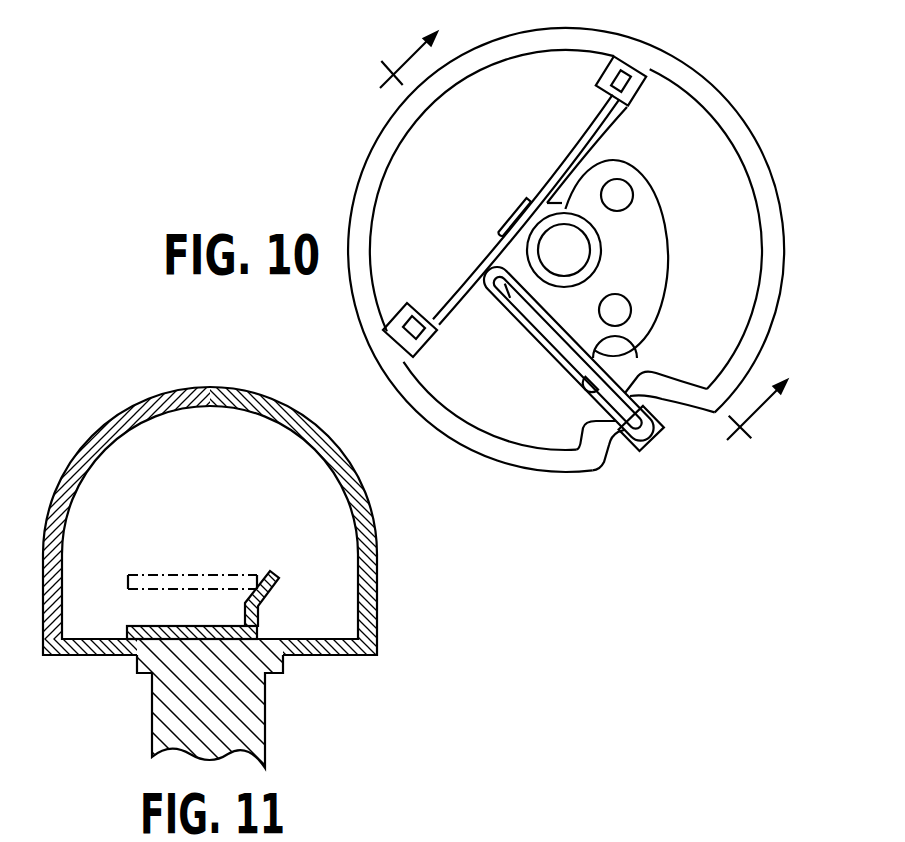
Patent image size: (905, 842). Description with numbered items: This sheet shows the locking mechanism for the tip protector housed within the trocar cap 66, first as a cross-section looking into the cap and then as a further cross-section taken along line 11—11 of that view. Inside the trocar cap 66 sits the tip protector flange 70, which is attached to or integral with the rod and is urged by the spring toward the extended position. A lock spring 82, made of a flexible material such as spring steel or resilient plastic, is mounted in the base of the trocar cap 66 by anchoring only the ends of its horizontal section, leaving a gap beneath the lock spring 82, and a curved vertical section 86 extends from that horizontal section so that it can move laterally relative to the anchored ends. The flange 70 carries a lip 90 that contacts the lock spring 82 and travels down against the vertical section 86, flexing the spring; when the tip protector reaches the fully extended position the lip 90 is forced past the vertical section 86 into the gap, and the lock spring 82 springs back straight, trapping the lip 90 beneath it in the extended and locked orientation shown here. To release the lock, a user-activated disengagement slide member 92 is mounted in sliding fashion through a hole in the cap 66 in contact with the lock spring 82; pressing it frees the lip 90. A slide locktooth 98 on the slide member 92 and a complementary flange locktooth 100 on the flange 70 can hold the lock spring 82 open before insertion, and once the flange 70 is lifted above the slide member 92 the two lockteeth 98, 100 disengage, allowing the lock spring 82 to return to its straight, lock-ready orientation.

In FIG. 10, the section line 11— 11 is at (572, 250).
In FIG. 10, the trocar cap 66 is at (540, 468).
In FIG. 11, the trocar cap 66 is at (378, 627).
In FIG. 10, the tip protector flange 70 is at (655, 238).
In FIG. 11, the tip protector flange 70 is at (130, 624).
In FIG. 10, the lock spring 82 is at (489, 252).
In FIG. 11, the lock spring 82 is at (262, 617).
In FIG. 11, the curved vertical section 86 is at (280, 576).
In FIG. 10, the lip 90 is at (513, 210).
In FIG. 10, the disengagement slide member 92 is at (648, 440).
In FIG. 10, the slide locktooth 98 is at (575, 368).
In FIG. 10, the flange locktooth 100 is at (636, 338).